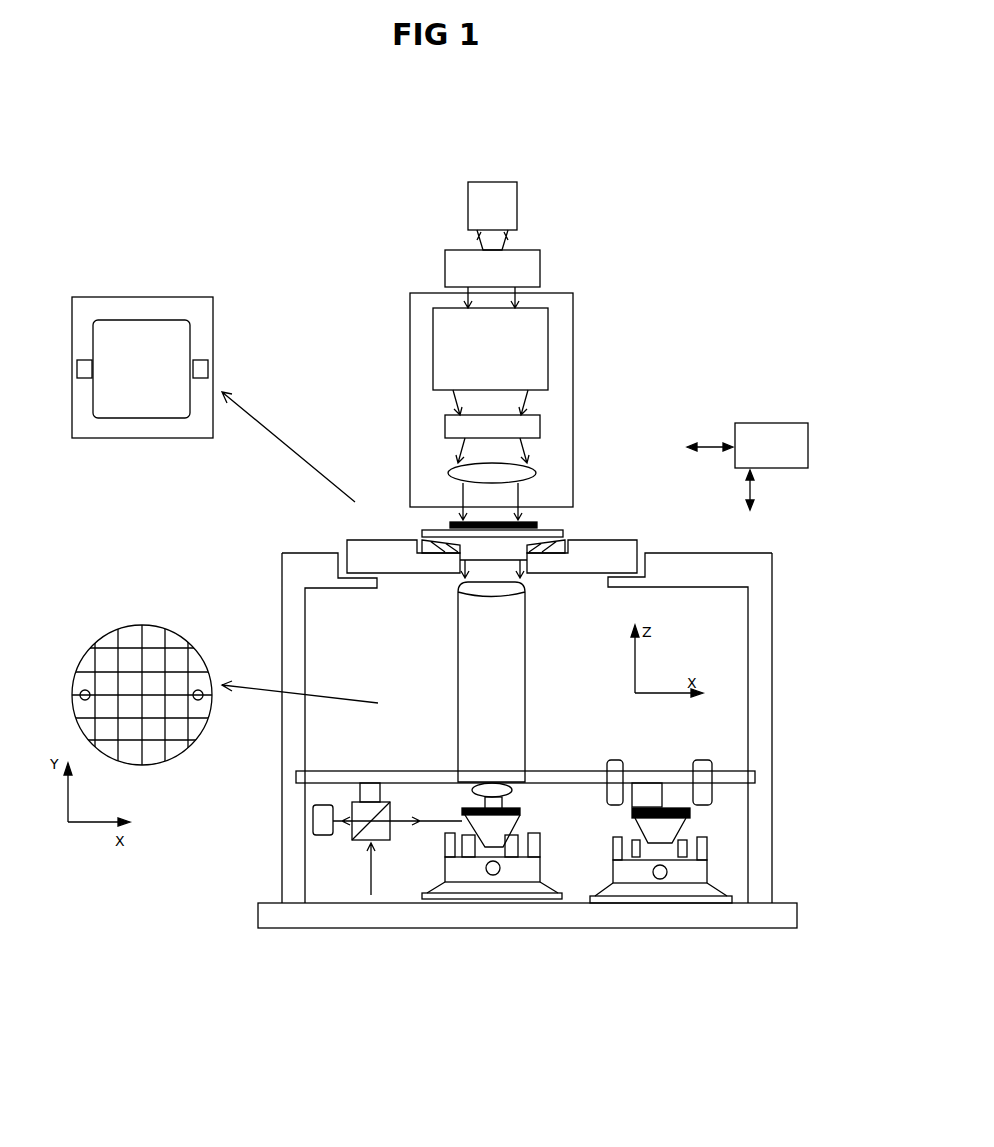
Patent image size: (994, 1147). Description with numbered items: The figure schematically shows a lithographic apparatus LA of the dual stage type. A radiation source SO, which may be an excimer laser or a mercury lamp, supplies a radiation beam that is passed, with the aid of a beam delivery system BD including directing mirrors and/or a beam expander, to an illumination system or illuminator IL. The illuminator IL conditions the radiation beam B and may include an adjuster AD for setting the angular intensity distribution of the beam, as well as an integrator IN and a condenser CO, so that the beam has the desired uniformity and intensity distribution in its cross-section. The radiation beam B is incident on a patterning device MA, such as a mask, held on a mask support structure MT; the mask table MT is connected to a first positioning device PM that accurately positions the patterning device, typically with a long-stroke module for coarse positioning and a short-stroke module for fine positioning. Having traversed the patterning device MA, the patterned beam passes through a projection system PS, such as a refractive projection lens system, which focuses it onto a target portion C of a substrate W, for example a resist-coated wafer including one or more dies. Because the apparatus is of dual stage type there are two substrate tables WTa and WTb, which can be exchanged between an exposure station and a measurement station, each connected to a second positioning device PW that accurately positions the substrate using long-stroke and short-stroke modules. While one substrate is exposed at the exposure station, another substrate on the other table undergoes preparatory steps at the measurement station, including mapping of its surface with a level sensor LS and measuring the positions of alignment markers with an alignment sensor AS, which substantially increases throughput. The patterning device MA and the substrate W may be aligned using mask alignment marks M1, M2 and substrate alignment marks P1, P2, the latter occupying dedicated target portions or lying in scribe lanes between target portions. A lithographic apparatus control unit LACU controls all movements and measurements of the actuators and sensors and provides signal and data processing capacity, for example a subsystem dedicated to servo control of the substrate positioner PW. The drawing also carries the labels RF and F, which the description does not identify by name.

The lithographic apparatus LA is at (686, 377).
The radiation source SO is at (518, 212).
The beam delivery system BD is at (542, 277).
The illumination system IL is at (575, 330).
The adjuster AD is at (548, 368).
The integrator IN is at (541, 421).
The condenser CO is at (536, 471).
The radiation beam B is at (538, 525).
The patterning device MA is at (437, 526).
The mask alignment mark M1 is at (197, 358).
The mask alignment mark M2 is at (78, 358).
The first positioning device PM is at (347, 548).
The mask support structure MT is at (627, 538).
The projection system PS is at (526, 670).
The substrate W is at (468, 808).
The target portion C is at (140, 694).
The substrate alignment mark P1 is at (83, 690).
The substrate alignment mark P2 is at (198, 688).
The reference frame RF is at (580, 770).
The alignment sensor AS is at (641, 790).
The level sensor LS is at (710, 762).
The substrate table WTa is at (522, 818).
The substrate table WTb is at (690, 819).
The second positioning device PW is at (430, 880).
The position sensor (interferometric device) F is at (343, 853).
The lithographic apparatus control unit LACU is at (747, 466).